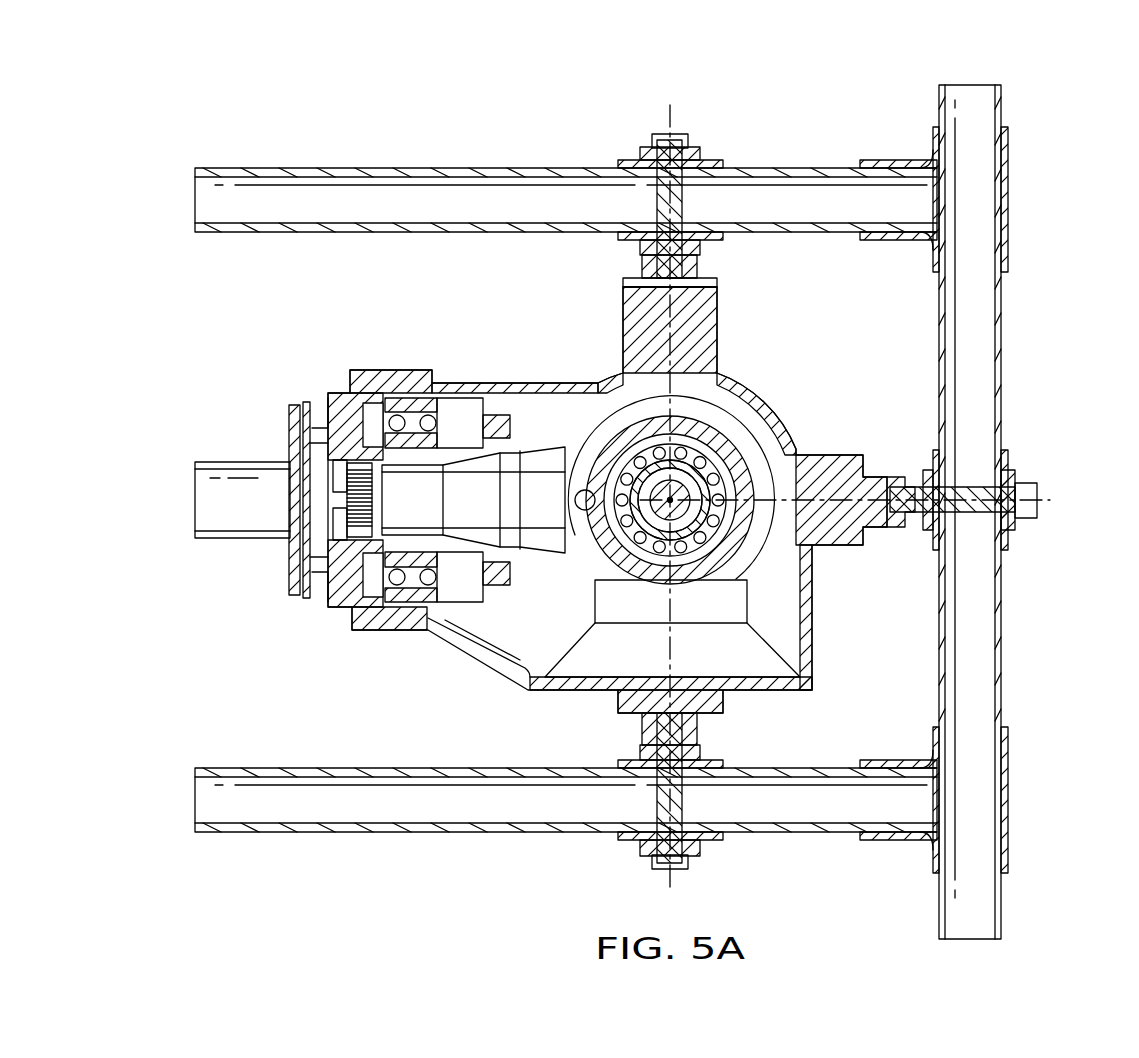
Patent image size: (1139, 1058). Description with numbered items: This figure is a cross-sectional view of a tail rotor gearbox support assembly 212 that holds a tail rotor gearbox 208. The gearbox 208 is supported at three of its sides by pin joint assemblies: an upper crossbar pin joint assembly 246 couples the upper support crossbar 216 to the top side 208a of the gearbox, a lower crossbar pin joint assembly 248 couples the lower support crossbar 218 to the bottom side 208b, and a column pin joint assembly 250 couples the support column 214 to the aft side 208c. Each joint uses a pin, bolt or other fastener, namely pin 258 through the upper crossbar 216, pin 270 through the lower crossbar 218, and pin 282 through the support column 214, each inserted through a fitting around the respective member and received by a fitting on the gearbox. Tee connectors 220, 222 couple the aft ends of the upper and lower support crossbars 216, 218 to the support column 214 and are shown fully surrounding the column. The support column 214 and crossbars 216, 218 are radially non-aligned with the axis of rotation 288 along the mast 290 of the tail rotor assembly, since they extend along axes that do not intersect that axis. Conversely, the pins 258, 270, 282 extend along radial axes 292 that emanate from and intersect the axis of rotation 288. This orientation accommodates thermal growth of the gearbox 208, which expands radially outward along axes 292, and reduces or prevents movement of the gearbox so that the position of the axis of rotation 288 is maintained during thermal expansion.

The tail rotor gearbox support assembly 212 is at (305, 103).
The support column 214 is at (1003, 337).
The upper support crossbar 216 is at (397, 168).
The lower support crossbar 218 is at (398, 832).
The tee connector 220 is at (1010, 185).
The tee connector 222 is at (1005, 810).
The upper crossbar pin joint assembly 246 is at (630, 150).
The lower crossbar pin joint assembly 248 is at (628, 850).
The column pin joint assembly 250 is at (1022, 548).
The pin 258 is at (690, 140).
The pin 270 is at (690, 860).
The pin 282 is at (1040, 492).
The tail rotor gearbox 208 is at (500, 385).
The top side 208a is at (625, 262).
The bottom side 208b is at (712, 735).
The aft side 208c is at (905, 480).
The axis of rotation 288 is at (645, 465).
The mast 290 is at (690, 548).
The axes 292 is at (668, 635).